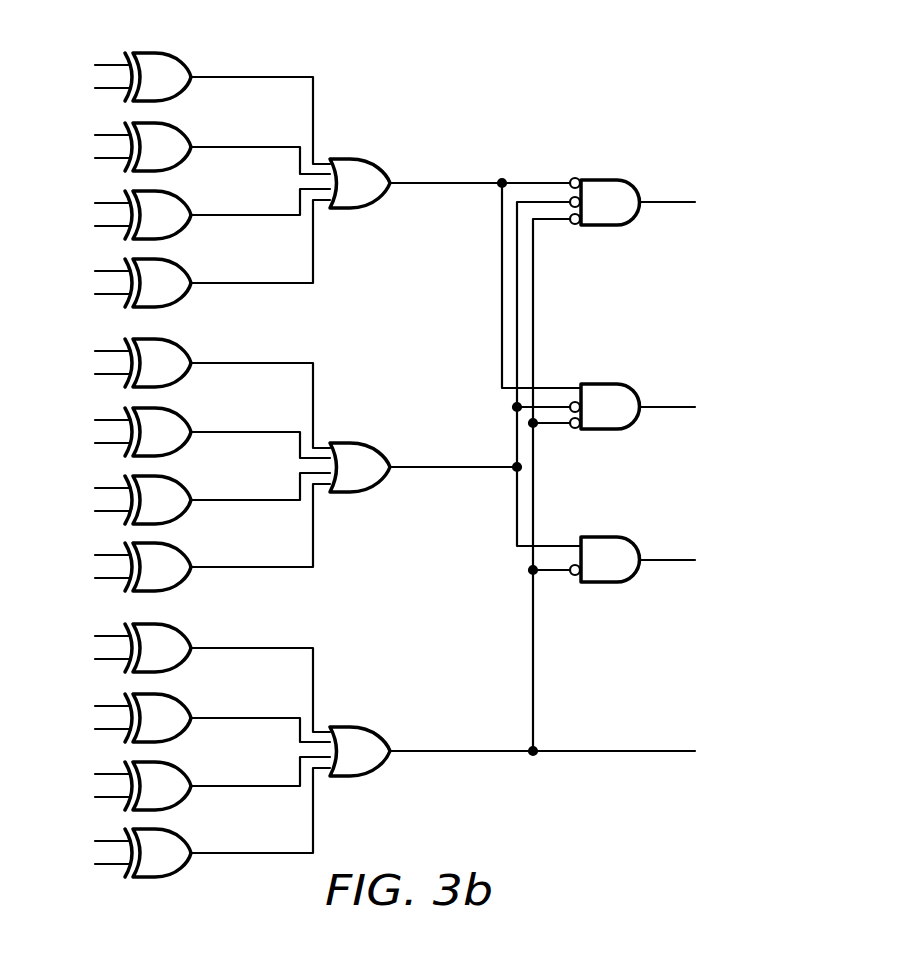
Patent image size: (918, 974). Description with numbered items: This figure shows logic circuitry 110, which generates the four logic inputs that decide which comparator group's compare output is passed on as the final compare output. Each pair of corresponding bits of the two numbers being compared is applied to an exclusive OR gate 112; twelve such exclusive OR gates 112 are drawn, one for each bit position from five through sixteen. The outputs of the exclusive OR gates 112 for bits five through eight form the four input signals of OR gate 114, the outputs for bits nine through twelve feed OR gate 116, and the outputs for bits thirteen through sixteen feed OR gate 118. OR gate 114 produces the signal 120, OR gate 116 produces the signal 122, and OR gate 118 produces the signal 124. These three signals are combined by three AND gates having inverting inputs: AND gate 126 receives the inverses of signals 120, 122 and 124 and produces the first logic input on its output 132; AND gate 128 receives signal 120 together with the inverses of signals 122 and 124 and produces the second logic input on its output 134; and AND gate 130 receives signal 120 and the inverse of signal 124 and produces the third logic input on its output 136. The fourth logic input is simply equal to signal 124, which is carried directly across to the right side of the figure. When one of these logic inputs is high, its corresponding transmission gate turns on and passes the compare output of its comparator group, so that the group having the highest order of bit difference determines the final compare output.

The logic circuitry 110 is at (576, 74).
The exclusive OR gate 112 is at (172, 54).
The OR gate 114 is at (356, 159).
The OR gate 116 is at (356, 445).
The OR gate 118 is at (354, 729).
The S8 signal 120 is at (393, 186).
The S12 signal 122 is at (393, 470).
The S16 signal 124 is at (393, 754).
The AND gate 126 is at (618, 227).
The AND gate 128 is at (618, 431).
The AND gate 130 is at (618, 584).
The output of AND gate 132 is at (642, 200).
The output of AND gate 134 is at (642, 405).
The output of AND gate 136 is at (642, 558).